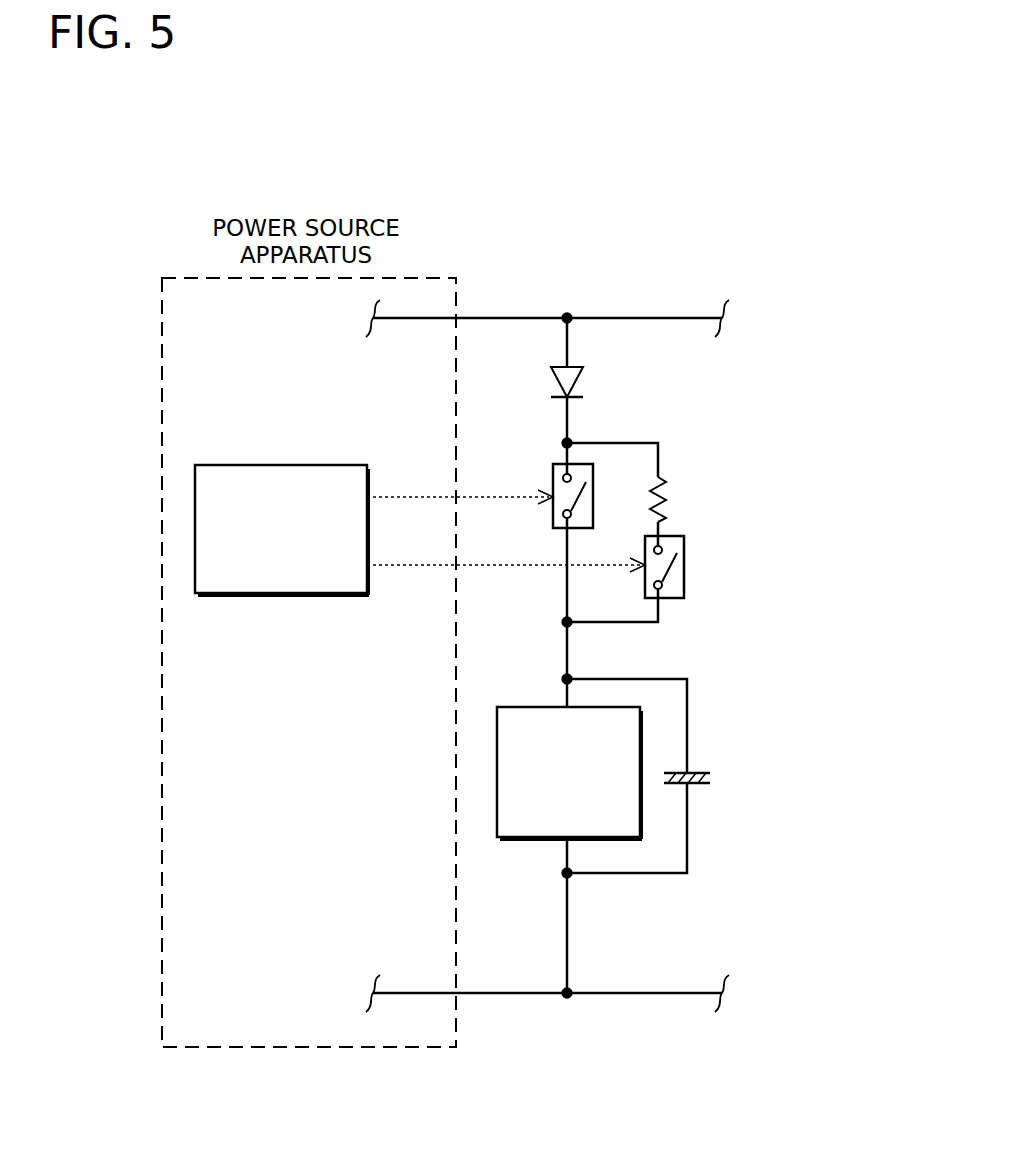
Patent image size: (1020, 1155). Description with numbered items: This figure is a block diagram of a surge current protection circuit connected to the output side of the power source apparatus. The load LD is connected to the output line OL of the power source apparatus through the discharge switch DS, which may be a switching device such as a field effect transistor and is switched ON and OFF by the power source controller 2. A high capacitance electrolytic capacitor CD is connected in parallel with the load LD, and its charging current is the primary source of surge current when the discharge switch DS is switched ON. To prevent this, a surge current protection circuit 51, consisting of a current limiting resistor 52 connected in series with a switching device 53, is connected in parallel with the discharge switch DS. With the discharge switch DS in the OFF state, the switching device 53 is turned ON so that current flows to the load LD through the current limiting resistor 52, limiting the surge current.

The output line OL is at (413, 320).
The discharge switch DS is at (551, 483).
The surge current protection circuit 51 is at (695, 532).
The current limiting resistor 52 is at (668, 487).
The switching device 53 is at (702, 567).
The load LD is at (537, 705).
The electrolytic capacitor CD is at (700, 770).
The power source controller 2 is at (279, 597).